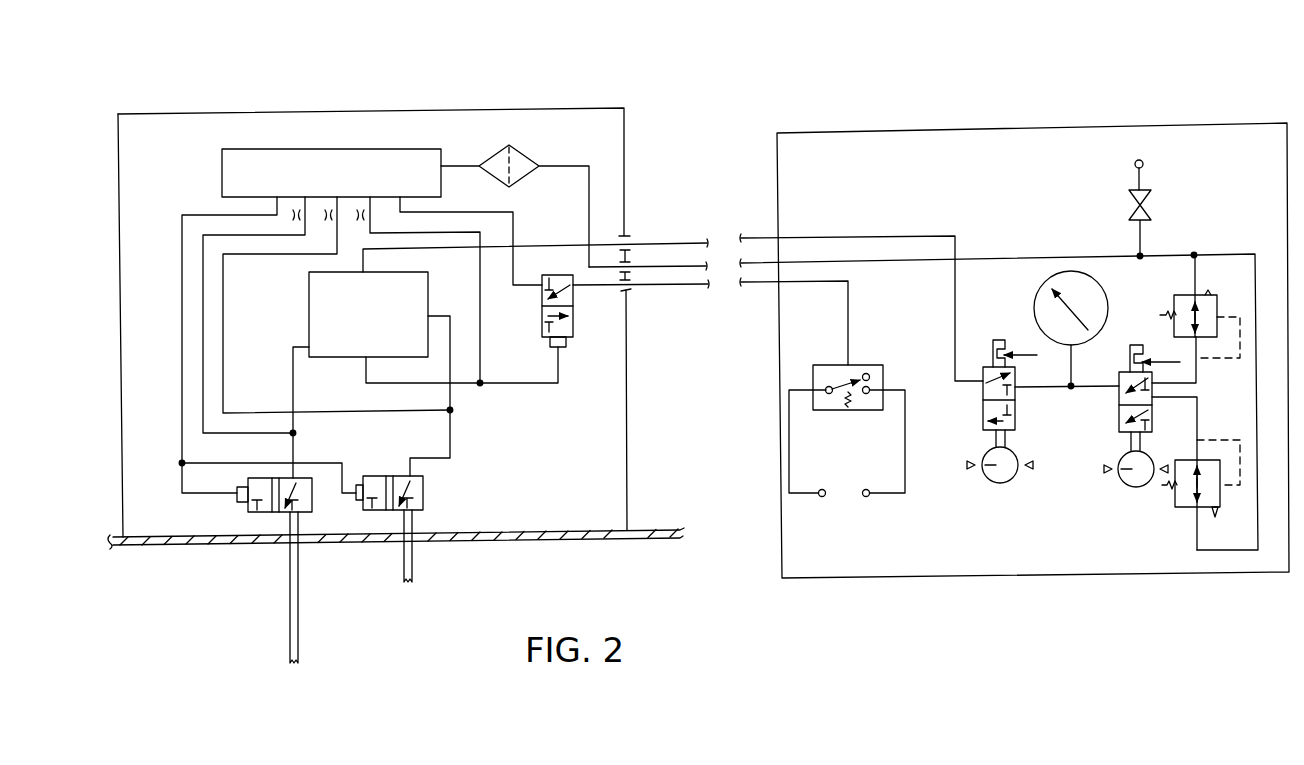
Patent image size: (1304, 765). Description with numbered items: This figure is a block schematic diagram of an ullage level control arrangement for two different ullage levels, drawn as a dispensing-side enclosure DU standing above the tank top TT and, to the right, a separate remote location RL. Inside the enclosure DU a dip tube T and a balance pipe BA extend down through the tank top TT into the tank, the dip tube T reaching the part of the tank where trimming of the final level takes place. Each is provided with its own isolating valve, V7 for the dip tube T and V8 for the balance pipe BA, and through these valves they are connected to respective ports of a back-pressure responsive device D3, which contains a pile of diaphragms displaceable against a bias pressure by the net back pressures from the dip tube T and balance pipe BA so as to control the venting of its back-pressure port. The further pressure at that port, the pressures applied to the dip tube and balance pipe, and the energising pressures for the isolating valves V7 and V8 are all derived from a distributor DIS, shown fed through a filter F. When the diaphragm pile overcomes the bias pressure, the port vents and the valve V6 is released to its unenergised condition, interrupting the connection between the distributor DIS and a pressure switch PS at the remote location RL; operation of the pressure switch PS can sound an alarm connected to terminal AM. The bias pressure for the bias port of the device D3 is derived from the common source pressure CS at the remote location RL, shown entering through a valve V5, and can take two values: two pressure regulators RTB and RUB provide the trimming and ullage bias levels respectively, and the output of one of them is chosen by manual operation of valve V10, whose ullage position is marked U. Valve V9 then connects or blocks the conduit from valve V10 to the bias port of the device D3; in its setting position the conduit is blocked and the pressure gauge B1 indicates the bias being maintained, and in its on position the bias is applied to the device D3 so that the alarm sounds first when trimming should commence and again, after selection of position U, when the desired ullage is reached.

The dispensing unit DU is at (124, 511).
The tank top / table TT is at (396, 555).
The distributor DIS is at (331, 184).
The filter F is at (515, 197).
The back-pressure responsive device D3 is at (348, 314).
The valve V6 is at (569, 325).
The isolating valve V7 is at (255, 501).
The isolating valve V8 is at (409, 498).
The dip tube T is at (290, 607).
The balance pipe BA is at (408, 563).
The remote location RL is at (1160, 578).
The common source pressure CS is at (1123, 161).
The valve V5 is at (1122, 223).
The pressure gauge B1 is at (1054, 327).
The pressure switch PS is at (848, 404).
The alarm terminal AM is at (847, 458).
The valve V9 is at (997, 426).
The valve V10 is at (1141, 443).
The ullage condition U is at (1135, 459).
The pressure regulator RUB is at (1201, 306).
The pressure regulator RTB is at (1202, 468).